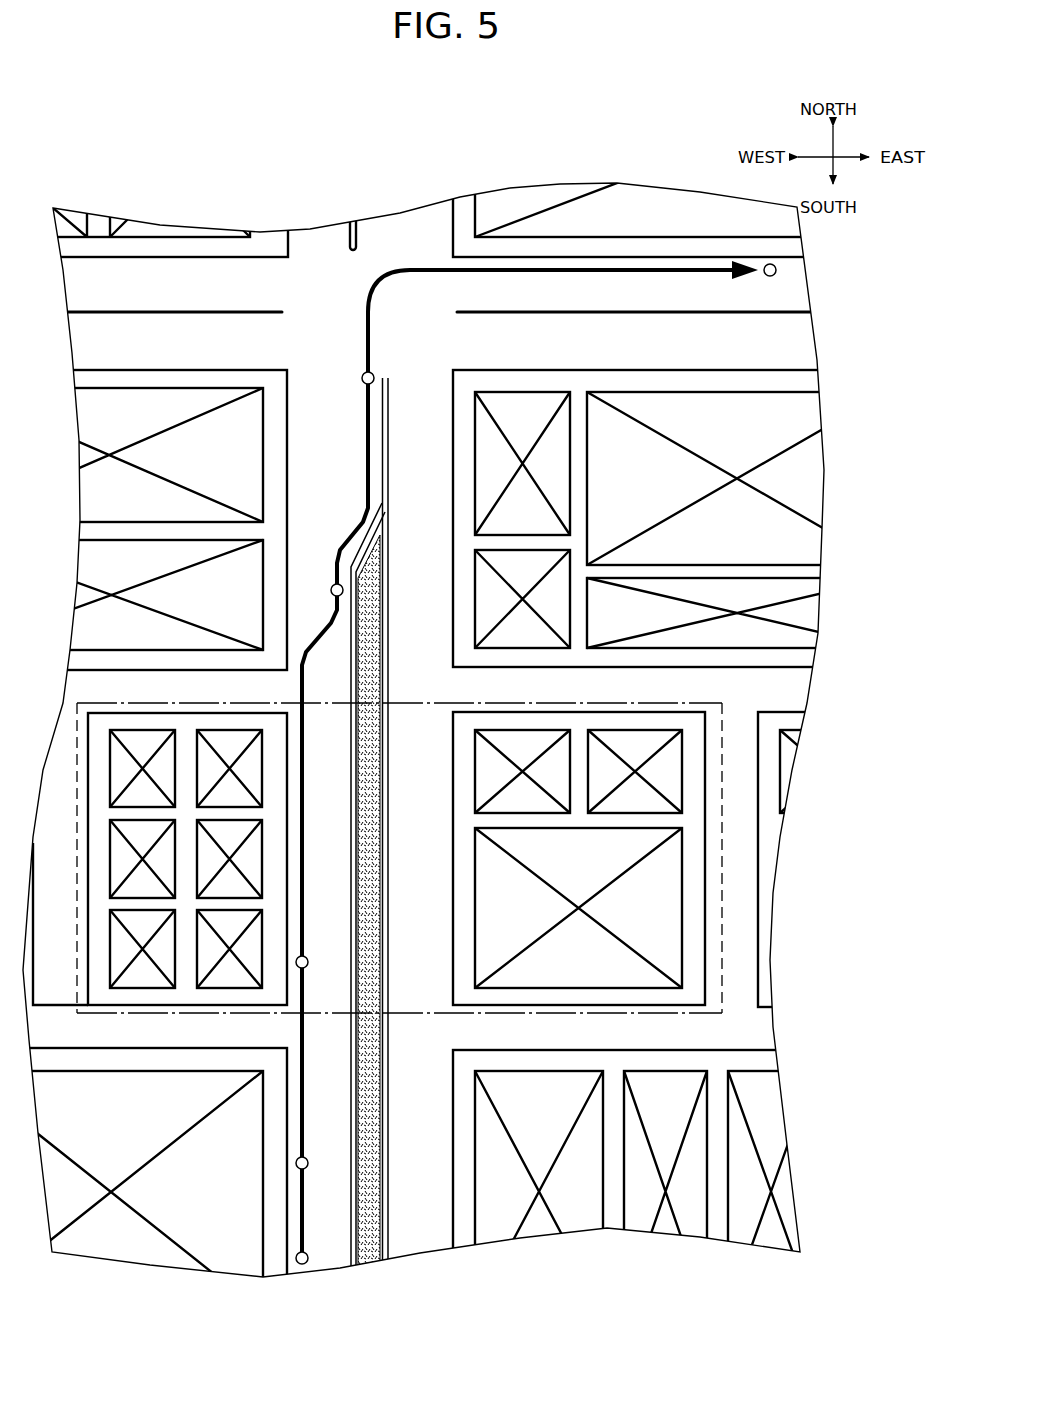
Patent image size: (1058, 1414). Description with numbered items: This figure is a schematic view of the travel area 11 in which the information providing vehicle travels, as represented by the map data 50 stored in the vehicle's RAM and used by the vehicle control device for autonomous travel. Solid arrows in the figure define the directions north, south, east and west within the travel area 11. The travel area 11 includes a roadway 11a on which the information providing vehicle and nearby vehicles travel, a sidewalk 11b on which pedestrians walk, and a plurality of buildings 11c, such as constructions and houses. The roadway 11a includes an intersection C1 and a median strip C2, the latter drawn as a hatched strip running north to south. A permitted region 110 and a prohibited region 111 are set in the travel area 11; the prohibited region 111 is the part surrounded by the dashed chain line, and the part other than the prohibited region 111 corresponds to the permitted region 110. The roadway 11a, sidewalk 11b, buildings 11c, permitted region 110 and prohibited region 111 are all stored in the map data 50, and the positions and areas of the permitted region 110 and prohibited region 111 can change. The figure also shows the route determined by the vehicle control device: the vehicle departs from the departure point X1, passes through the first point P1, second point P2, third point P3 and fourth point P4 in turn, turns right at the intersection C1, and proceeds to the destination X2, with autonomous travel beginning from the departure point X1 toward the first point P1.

The map data 50 is at (152, 198).
The travel area 11 is at (405, 233).
The roadway 11a is at (790, 348).
The sidewalk 11b is at (275, 418).
The buildings 11c is at (238, 470).
The prohibited region 111 is at (724, 828).
The permitted region 110 is at (438, 1083).
The intersection C1 is at (350, 329).
The median strip C2 is at (384, 557).
The first point P1 is at (307, 1160).
The second point P2 is at (307, 958).
The third point P3 is at (333, 587).
The fourth point P4 is at (372, 372).
The departure point X1 is at (306, 1263).
The destination X2 is at (776, 272).